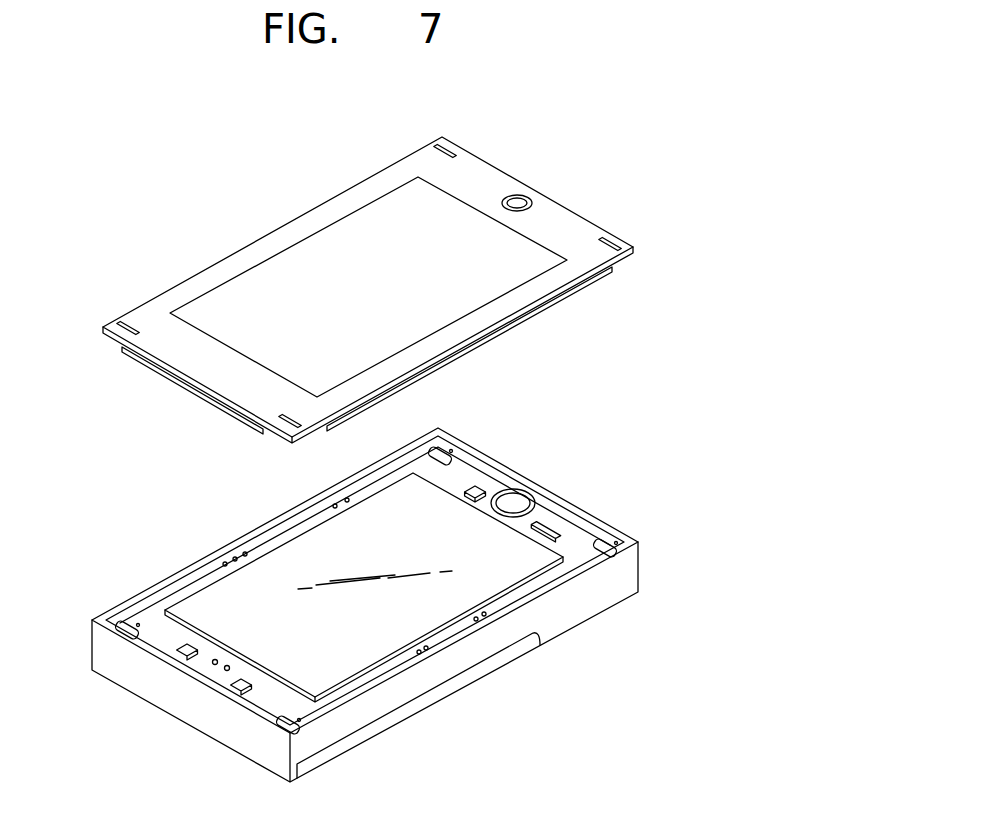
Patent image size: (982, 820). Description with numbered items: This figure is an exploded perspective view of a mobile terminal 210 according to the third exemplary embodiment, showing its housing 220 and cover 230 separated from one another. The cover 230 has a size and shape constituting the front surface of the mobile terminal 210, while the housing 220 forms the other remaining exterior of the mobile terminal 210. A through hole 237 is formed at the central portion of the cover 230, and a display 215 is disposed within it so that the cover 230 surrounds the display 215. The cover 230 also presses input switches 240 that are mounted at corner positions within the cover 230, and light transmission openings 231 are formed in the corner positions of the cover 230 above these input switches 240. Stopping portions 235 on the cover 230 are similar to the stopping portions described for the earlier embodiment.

The mobile terminal 210 is at (688, 253).
The display 215 is at (487, 580).
The housing 220 is at (640, 567).
The cover 230 is at (430, 167).
The light transmission openings 231 is at (610, 237).
The stopping portions 235 is at (330, 423).
The through hole 237 is at (310, 257).
The input switches 240 is at (468, 458).